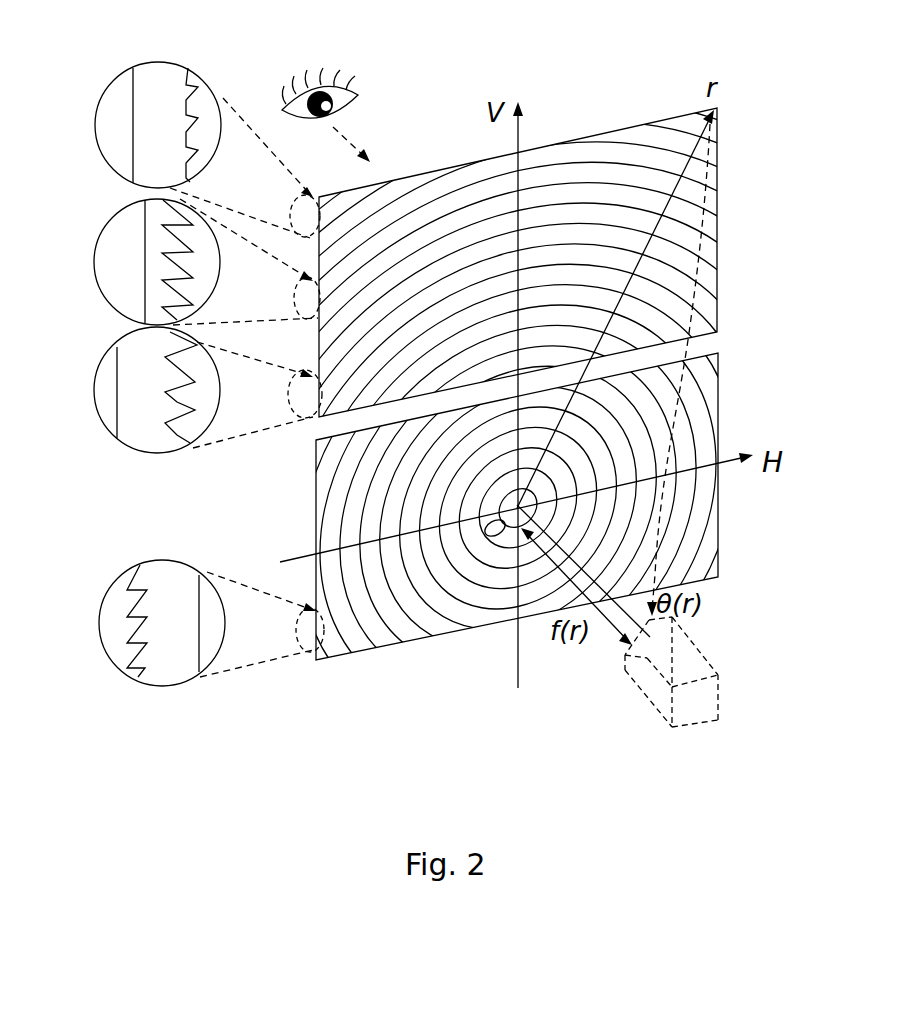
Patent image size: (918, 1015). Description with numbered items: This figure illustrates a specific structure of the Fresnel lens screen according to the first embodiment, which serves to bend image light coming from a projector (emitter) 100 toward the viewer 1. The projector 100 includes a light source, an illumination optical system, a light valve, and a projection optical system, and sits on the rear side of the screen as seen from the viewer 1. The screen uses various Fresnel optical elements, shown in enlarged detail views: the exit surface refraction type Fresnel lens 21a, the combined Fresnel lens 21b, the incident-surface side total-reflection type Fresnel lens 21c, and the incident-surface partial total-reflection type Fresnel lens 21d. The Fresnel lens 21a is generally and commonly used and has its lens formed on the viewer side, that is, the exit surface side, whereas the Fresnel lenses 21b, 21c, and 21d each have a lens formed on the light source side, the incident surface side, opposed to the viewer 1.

The viewer 1 is at (318, 60).
The exit surface refraction type Fresnel lens 21a is at (188, 623).
The combined Fresnel lens 21b is at (182, 390).
The incident-surface side total-reflection type Fresnel lens 21c is at (181, 262).
The incident-surface partial total-reflection type Fresnel lens 21d is at (181, 150).
The projector 100 is at (697, 668).